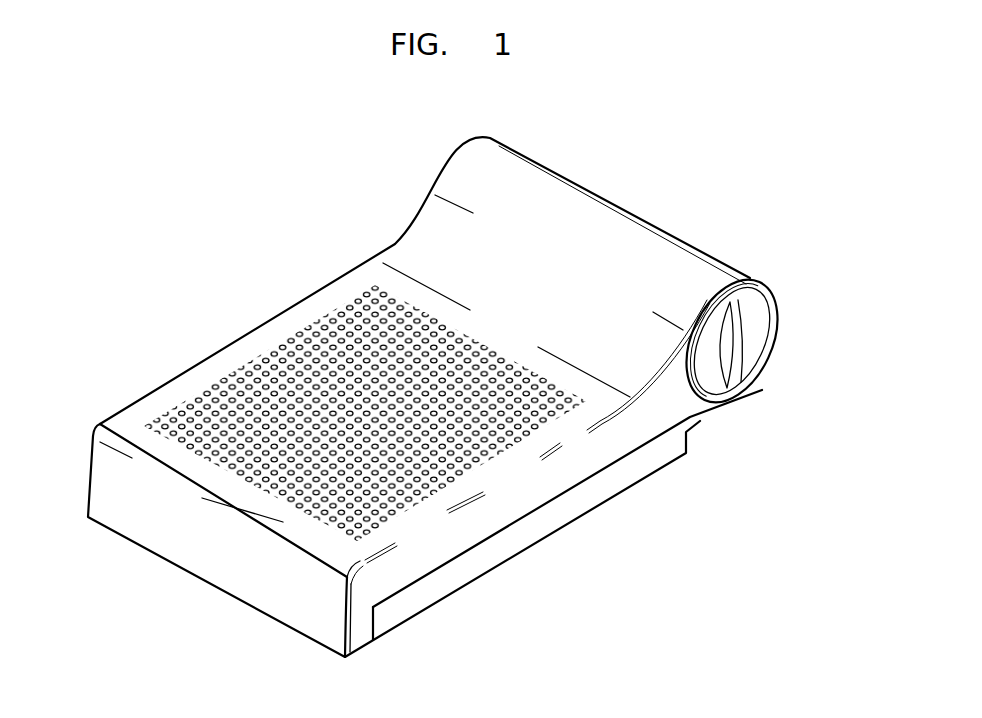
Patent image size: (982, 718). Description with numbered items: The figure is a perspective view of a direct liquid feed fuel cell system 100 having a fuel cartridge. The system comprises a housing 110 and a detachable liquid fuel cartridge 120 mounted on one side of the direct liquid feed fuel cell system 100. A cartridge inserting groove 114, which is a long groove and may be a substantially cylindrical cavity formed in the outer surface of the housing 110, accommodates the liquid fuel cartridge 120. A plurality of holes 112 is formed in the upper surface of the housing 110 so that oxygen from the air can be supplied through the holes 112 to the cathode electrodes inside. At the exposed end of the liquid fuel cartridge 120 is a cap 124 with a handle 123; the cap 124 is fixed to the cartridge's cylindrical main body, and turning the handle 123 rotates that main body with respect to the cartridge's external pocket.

The direct liquid feed fuel cell system 100 is at (251, 218).
The housing 110 is at (194, 359).
The holes 112 is at (300, 330).
The cartridge inserting groove 114 is at (772, 312).
The liquid fuel cartridge 120 is at (711, 382).
The handle 123 is at (737, 343).
The cap 124 is at (748, 352).